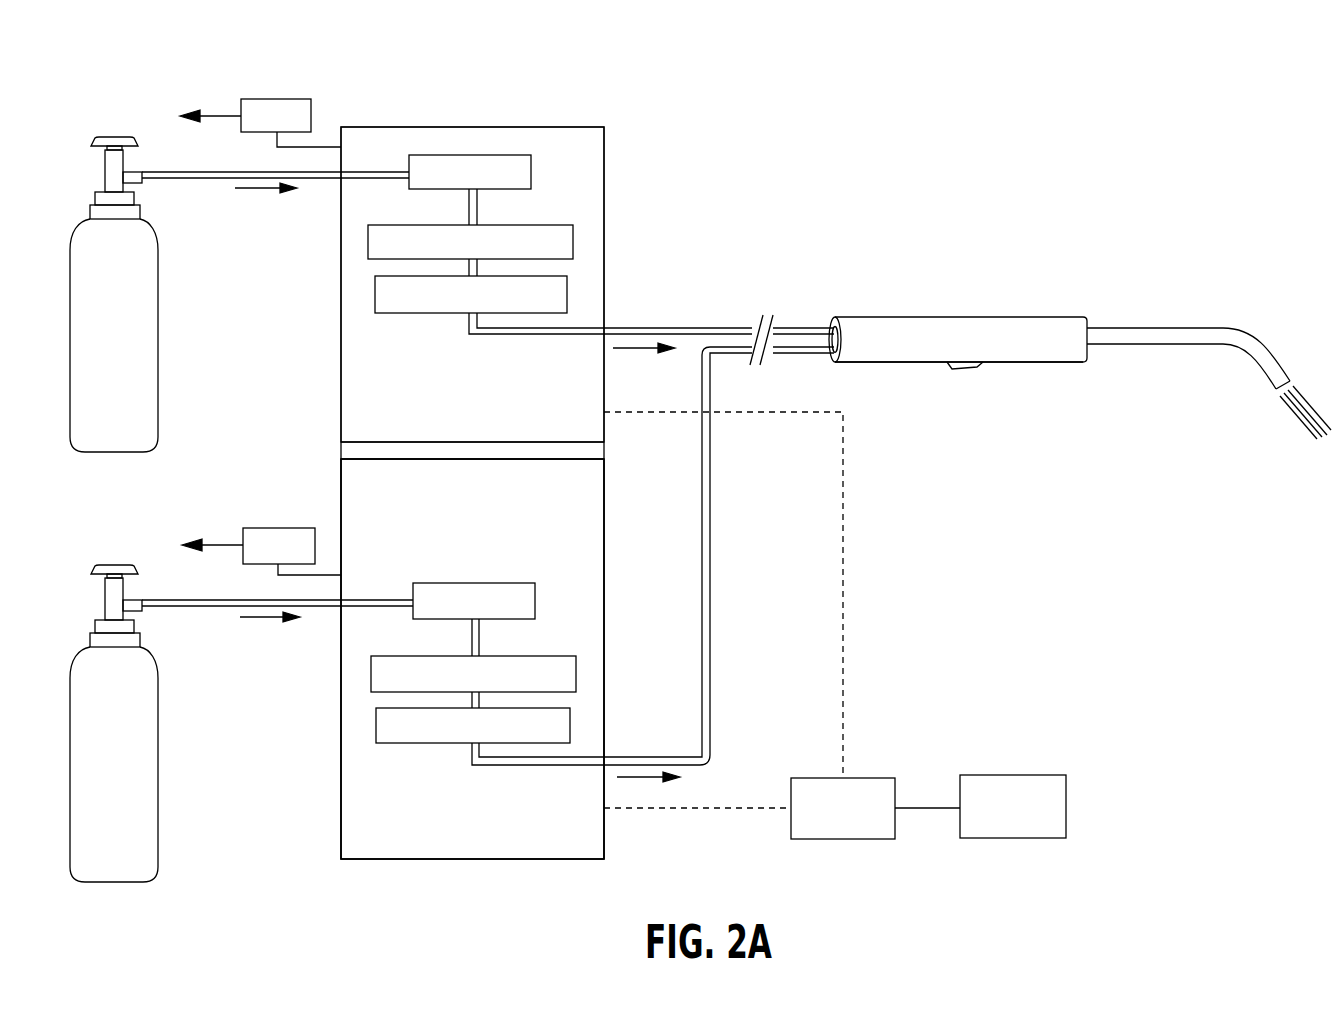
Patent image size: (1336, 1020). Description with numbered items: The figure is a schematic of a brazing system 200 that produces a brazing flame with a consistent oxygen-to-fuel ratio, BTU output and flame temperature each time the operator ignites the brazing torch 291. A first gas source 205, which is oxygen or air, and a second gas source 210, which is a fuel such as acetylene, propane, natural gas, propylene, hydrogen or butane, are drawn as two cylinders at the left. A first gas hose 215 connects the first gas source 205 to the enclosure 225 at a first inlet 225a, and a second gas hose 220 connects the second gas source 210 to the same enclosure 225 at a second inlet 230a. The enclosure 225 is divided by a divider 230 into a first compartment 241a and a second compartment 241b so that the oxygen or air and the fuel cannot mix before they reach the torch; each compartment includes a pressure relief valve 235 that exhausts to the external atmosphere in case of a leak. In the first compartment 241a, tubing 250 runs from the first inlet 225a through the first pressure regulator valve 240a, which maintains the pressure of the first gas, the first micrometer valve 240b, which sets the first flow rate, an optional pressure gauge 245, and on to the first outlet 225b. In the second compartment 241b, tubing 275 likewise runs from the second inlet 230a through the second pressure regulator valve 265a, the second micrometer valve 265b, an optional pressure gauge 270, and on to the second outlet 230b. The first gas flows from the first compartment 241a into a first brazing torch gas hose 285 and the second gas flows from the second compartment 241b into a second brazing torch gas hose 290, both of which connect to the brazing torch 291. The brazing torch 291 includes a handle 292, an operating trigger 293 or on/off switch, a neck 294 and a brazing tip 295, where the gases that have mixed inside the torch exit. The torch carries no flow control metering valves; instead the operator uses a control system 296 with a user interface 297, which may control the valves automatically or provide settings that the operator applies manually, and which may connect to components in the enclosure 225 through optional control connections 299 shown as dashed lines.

The brazing system 200 is at (792, 288).
The first gas source 205 is at (158, 318).
The second gas source 210 is at (159, 750).
The first gas hose 215 is at (222, 179).
The second gas hose 220 is at (215, 607).
The enclosure 225 is at (420, 127).
The first inlet 225a is at (341, 180).
The first outlet 225b is at (604, 328).
The divider 230 is at (458, 442).
The second inlet 230a is at (341, 608).
The second outlet 230b is at (604, 757).
The pressure relief valve 235 is at (292, 99).
The first pressure regulator valve 240a is at (531, 172).
The first micrometer valve 240b is at (573, 238).
The first compartment 241a is at (582, 140).
The second compartment 241b is at (383, 843).
The pressure gauge 245 is at (567, 292).
The tubing 250 is at (469, 213).
The second pressure regulator valve 265a is at (535, 598).
The second micrometer valve 265b is at (576, 676).
The pressure gauge 270 is at (570, 725).
The tubing 275 is at (472, 643).
The first brazing torch gas hose 285 is at (700, 328).
The second brazing torch gas hose 290 is at (710, 540).
The brazing torch 291 is at (925, 317).
The handle 292 is at (878, 362).
The operating trigger 293 is at (965, 367).
The neck 294 is at (1140, 328).
The brazing tip 295 is at (1282, 367).
The control system 296 is at (830, 839).
The user interface 297 is at (1010, 838).
The control connections 299 is at (843, 560).